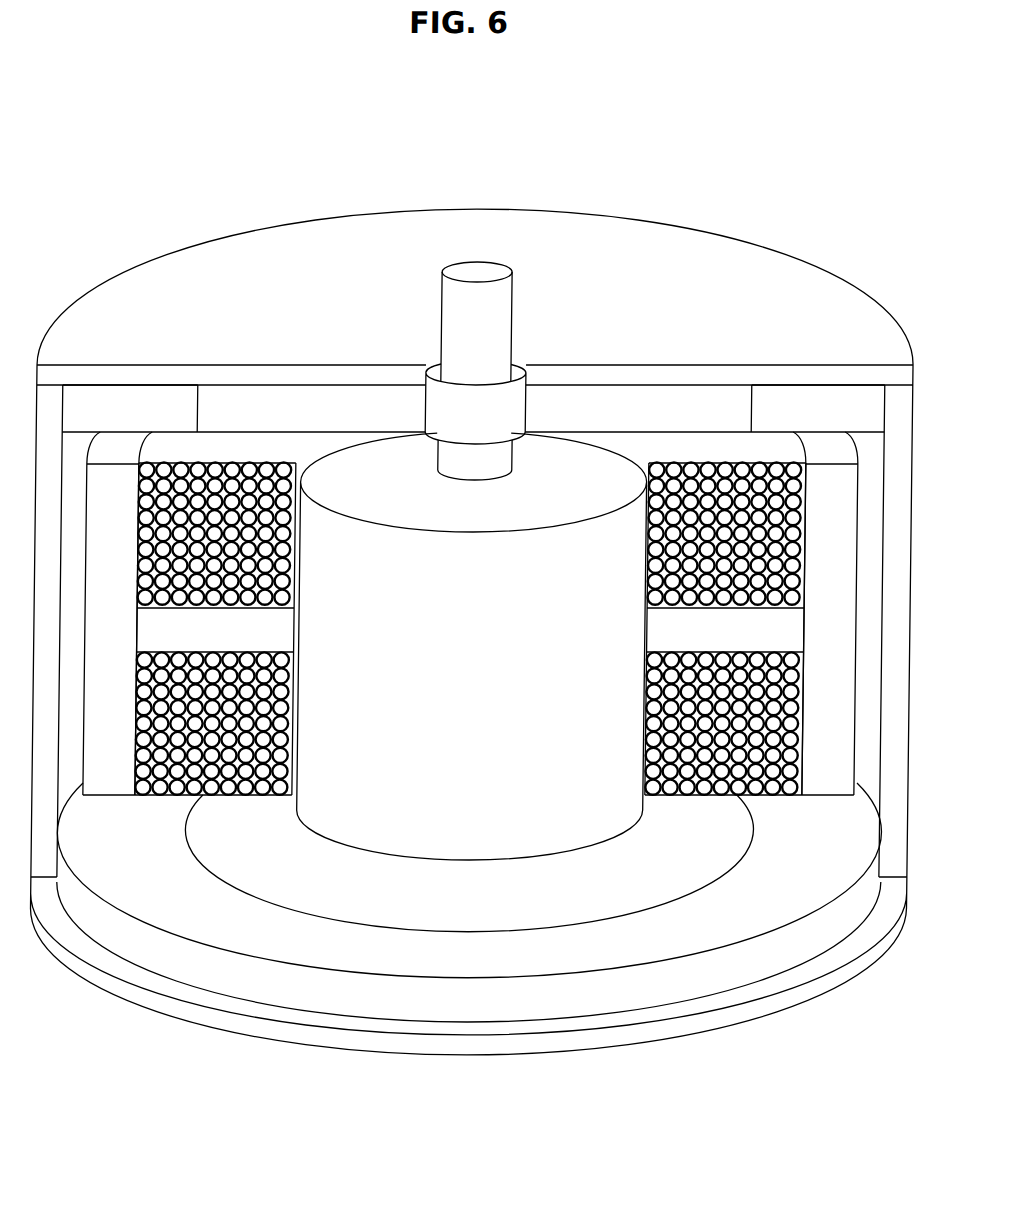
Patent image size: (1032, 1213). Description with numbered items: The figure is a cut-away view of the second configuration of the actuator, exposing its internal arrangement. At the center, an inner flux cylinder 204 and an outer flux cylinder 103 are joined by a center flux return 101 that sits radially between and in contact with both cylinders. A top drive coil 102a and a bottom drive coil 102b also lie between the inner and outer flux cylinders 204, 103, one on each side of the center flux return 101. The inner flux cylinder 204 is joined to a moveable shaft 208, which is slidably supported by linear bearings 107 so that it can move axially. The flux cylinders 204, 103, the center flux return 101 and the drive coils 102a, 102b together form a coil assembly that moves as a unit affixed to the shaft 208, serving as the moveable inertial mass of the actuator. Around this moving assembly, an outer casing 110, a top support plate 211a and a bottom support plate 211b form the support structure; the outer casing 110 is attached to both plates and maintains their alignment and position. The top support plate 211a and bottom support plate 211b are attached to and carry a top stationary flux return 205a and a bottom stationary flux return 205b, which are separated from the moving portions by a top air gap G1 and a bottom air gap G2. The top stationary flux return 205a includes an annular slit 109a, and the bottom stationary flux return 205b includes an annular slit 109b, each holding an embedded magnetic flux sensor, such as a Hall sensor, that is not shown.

The top support plate 211a is at (68, 317).
The bottom support plate 211b is at (696, 1027).
The outer flux cylinder 103 is at (122, 450).
The annular slit 109a is at (200, 430).
The annular slit 109b is at (219, 863).
The top stationary flux return 205a is at (360, 400).
The bottom stationary flux return 205b is at (160, 950).
The moveable shaft 208 is at (483, 263).
The linear bearings 107 is at (515, 388).
The inner flux cylinder 204 is at (605, 470).
The top drive coil 102a is at (703, 470).
The bottom drive coil 102b is at (730, 798).
The center flux return 101 is at (238, 618).
The outer casing 110 is at (48, 862).
The top air gap G1 is at (770, 437).
The bottom air gap G2 is at (768, 822).